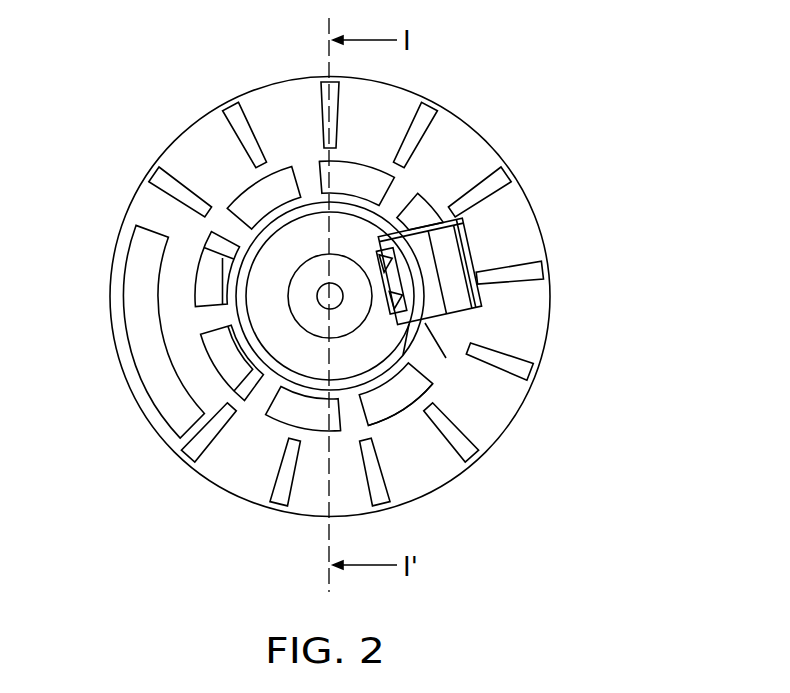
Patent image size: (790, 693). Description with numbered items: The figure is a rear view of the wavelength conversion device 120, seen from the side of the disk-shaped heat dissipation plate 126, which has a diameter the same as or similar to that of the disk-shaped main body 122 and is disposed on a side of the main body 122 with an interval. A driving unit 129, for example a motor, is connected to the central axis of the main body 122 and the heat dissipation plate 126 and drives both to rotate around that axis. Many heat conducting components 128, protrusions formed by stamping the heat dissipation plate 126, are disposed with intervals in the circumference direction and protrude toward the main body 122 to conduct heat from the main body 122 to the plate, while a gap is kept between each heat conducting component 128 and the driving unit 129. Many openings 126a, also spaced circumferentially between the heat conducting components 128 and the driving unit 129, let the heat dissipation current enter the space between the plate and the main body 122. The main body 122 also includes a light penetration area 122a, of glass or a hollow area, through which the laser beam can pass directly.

The wavelength conversion device 120 is at (670, 529).
The main body 122 is at (393, 395).
The light penetration area 122a is at (135, 363).
The heat dissipation plate 126 is at (510, 397).
The opening 126a is at (383, 421).
The heat conducting component 128 is at (420, 132).
The driving unit 129 is at (380, 335).